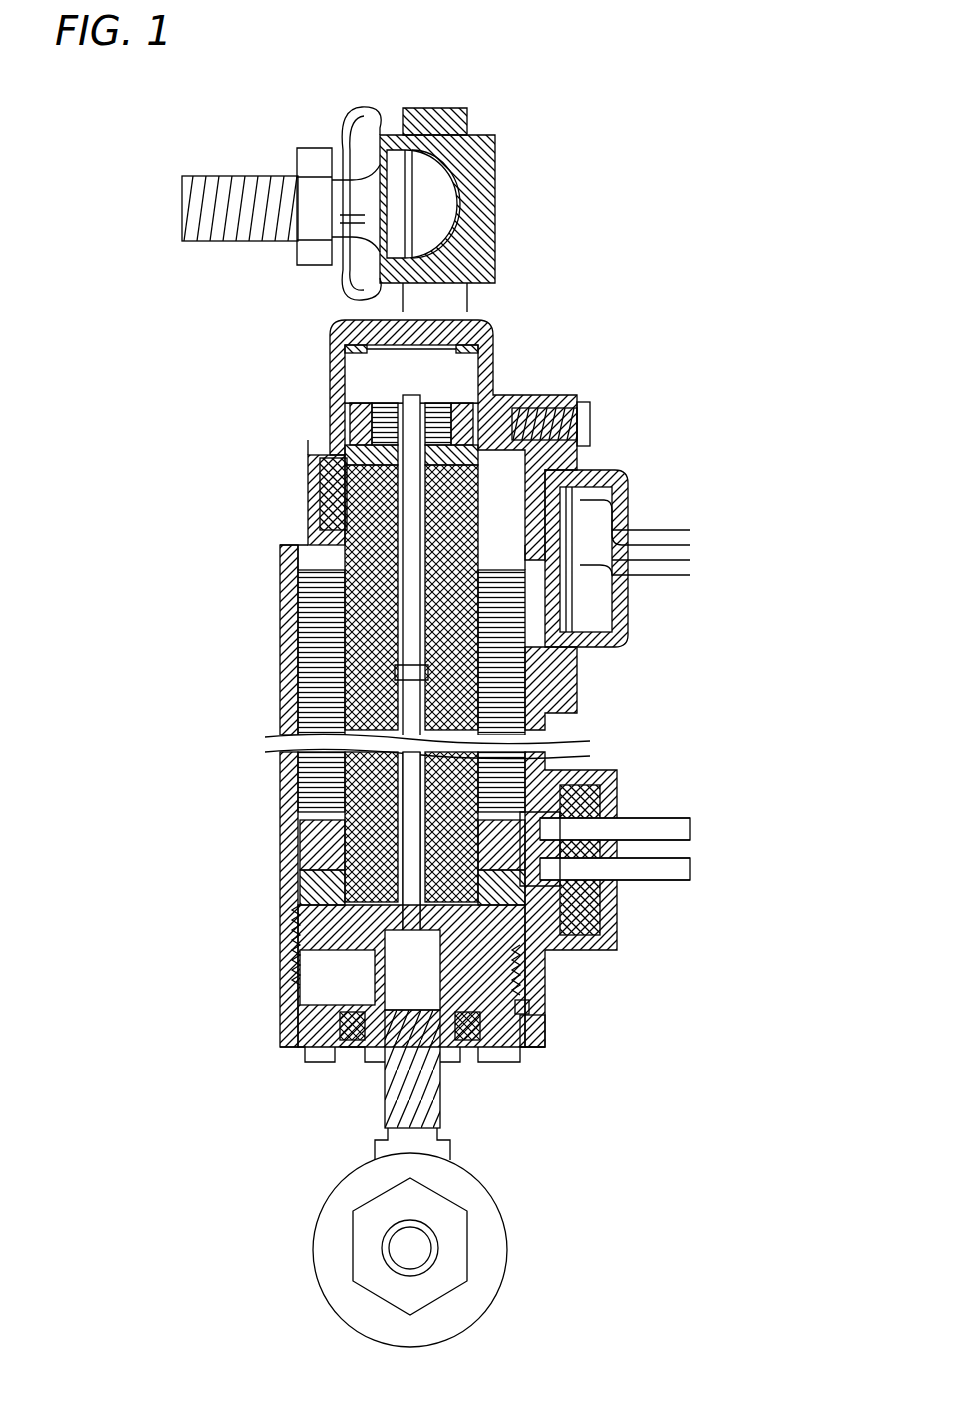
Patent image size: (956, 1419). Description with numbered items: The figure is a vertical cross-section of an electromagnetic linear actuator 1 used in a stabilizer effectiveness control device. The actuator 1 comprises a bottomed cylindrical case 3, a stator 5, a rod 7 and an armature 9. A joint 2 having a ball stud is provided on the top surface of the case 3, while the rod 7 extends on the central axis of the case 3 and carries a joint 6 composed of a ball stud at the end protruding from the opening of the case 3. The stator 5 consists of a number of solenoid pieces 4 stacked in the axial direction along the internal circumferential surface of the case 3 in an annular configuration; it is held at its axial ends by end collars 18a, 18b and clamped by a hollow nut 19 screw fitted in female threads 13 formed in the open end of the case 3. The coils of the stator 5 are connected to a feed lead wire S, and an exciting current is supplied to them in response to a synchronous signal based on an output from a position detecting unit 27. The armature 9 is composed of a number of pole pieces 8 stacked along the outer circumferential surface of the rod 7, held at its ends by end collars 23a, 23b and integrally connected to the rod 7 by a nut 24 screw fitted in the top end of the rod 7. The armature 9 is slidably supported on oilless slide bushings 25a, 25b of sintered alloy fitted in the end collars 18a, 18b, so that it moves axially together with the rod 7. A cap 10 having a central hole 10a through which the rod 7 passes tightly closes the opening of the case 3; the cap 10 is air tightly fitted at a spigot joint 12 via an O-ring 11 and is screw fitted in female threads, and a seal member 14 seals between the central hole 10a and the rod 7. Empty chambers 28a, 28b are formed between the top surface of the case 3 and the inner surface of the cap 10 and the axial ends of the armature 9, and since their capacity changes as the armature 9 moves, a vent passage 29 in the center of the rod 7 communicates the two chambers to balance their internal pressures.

The actuator 1 is at (620, 333).
The joint 2 is at (358, 168).
The bottomed cylindrical case 3 is at (306, 480).
The solenoid pieces 4 is at (296, 625).
The stator 5 is at (298, 667).
The joint 6 is at (470, 1200).
The rod 7 is at (440, 1082).
The pole pieces 8 is at (548, 690).
The armature 9 is at (535, 748).
The cap 10 is at (300, 1055).
The central hole 10a is at (378, 1060).
The O-ring 11 is at (540, 1003).
The spigot joint 12 is at (545, 1022).
The female threads 13 is at (522, 990).
The seal member 14 is at (462, 1062).
The end collar 18a is at (322, 540).
The end collar 18b is at (300, 858).
The hollow nut 19 is at (296, 925).
The end collar 23a is at (482, 410).
The end collar 23b is at (350, 972).
The nut 24 is at (350, 410).
The oilless slide bushing 25a is at (345, 452).
The oilless slide bushing 25b is at (302, 835).
The position detecting unit 27 is at (516, 552).
The empty chamber 28a is at (433, 396).
The empty chamber 28b is at (295, 1045).
The vent passage 29 is at (305, 772).
The feed lead wire S is at (628, 878).